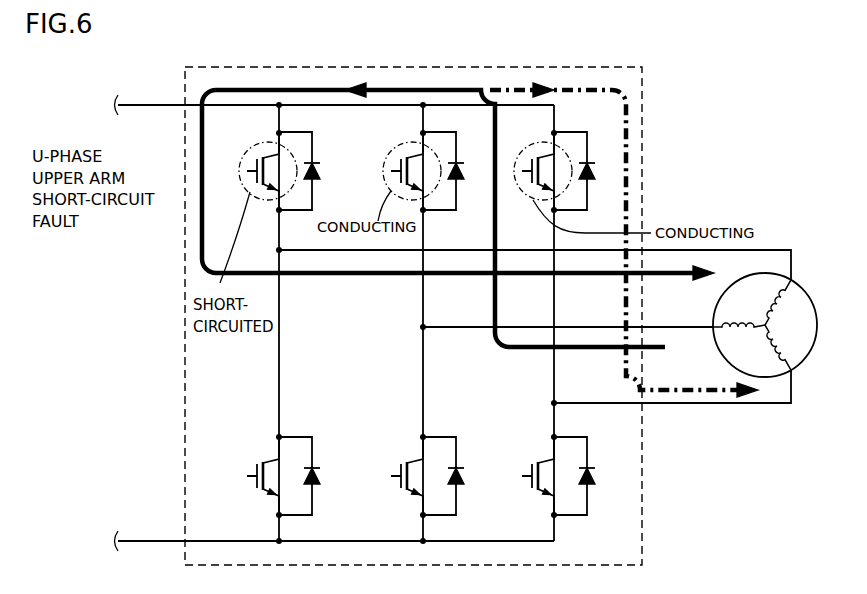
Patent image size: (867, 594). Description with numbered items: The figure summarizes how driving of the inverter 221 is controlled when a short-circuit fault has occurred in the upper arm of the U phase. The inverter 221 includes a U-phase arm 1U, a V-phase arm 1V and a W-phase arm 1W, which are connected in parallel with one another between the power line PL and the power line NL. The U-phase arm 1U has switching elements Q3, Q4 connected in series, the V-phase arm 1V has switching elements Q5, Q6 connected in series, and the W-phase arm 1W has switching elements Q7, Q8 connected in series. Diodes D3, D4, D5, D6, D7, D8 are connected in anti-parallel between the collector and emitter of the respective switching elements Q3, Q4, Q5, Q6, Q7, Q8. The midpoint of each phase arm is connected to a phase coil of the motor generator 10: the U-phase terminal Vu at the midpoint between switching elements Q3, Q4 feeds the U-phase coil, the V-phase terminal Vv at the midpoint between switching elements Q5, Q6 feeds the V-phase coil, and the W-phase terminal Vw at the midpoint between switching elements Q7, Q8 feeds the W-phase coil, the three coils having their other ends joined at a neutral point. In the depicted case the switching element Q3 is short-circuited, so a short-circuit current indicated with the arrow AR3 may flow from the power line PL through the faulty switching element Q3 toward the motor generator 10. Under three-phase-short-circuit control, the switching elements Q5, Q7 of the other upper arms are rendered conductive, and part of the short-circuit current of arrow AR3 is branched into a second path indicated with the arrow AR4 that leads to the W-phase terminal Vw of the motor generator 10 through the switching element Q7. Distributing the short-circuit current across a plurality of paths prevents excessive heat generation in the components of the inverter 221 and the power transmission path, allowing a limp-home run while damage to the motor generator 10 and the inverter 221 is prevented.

The inverter 221 is at (250, 67).
The arrow AR3 is at (397, 88).
The arrow AR4 is at (578, 88).
The power line PL is at (335, 99).
The power line NL is at (335, 548).
The U-phase arm 1U is at (272, 387).
The V-phase arm 1V is at (416, 387).
The W-phase arm 1W is at (549, 386).
The switching element Q3 is at (273, 150).
The switching element Q4 is at (273, 458).
The switching element Q5 is at (417, 150).
The switching element Q6 is at (417, 458).
The switching element Q7 is at (548, 150).
The switching element Q8 is at (548, 458).
The diode D3 is at (316, 176).
The diode D4 is at (316, 479).
The diode D5 is at (460, 176).
The diode D6 is at (460, 479).
The diode D7 is at (591, 176).
The diode D8 is at (591, 479).
The U-phase terminal Vu is at (549, 263).
The V-phase terminal Vv is at (568, 339).
The W-phase terminal Vw is at (689, 386).
The motor generator 10 is at (770, 378).